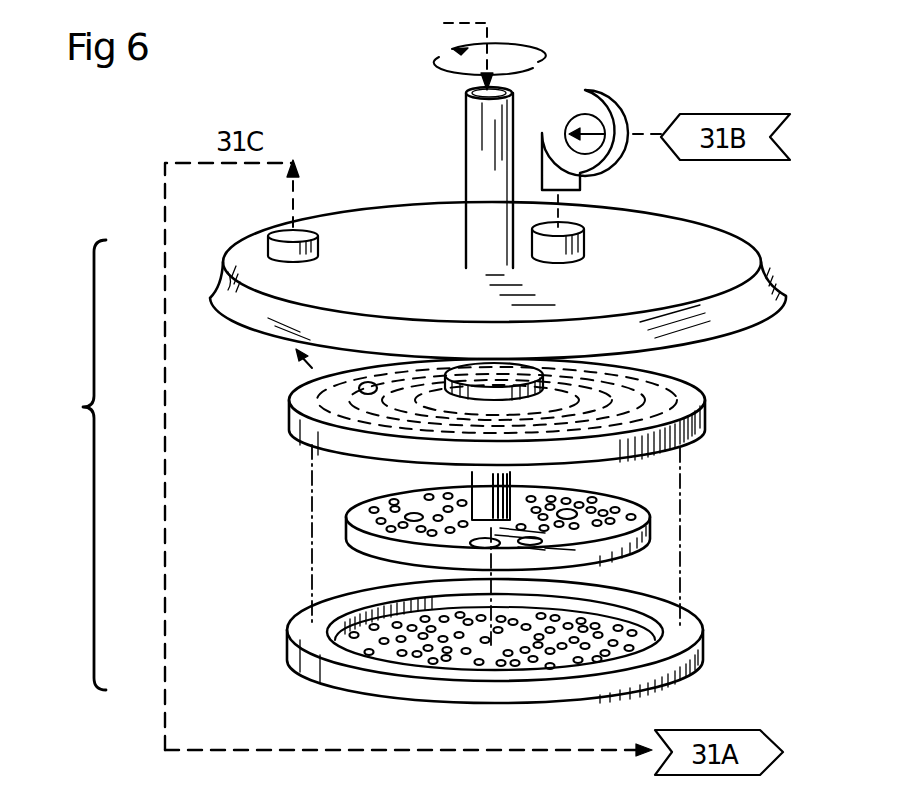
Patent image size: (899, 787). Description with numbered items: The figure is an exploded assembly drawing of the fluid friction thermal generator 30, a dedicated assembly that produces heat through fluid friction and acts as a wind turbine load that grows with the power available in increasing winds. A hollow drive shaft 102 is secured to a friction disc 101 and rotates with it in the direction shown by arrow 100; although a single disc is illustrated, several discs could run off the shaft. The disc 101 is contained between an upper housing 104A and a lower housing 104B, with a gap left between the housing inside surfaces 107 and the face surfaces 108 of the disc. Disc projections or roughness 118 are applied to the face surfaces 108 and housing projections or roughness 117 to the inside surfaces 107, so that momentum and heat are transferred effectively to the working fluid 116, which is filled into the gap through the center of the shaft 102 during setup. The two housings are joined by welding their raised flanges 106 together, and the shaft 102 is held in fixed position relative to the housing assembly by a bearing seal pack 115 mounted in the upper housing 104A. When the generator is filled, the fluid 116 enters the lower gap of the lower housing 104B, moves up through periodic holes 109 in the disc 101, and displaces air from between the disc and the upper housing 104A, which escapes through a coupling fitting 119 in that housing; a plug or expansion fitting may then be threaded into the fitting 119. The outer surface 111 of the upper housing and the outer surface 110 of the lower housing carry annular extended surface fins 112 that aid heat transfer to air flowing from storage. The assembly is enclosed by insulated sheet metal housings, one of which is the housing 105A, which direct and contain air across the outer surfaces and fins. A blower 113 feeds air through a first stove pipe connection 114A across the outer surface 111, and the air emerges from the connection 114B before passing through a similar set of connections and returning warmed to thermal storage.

The thermal generator 30 is at (63, 465).
The arrow 100 is at (543, 49).
The friction disc 101 is at (348, 540).
The hollow drive shaft 102 is at (468, 138).
The upper housing 104A is at (705, 421).
The lower housing 104B is at (697, 651).
The insulated sheet metal housing 105A is at (702, 240).
The raised flanges 106 is at (323, 643).
The housing inside surfaces 107 is at (637, 633).
The face surfaces 108 is at (372, 520).
The periodic holes 109 is at (570, 517).
The outer surface 110 is at (374, 694).
The outer surface 111 is at (330, 380).
The annular extended surface fins 112 is at (660, 384).
The blower 113 is at (598, 110).
The first stove pipe connection 114A is at (584, 246).
The connection 114B is at (318, 248).
The bearing seal pack 115 is at (500, 376).
The working fluid 116 is at (442, 49).
The housing projections or roughness 117 is at (600, 627).
The disc projections or roughness 118 is at (630, 517).
The coupling fitting 119 is at (369, 382).